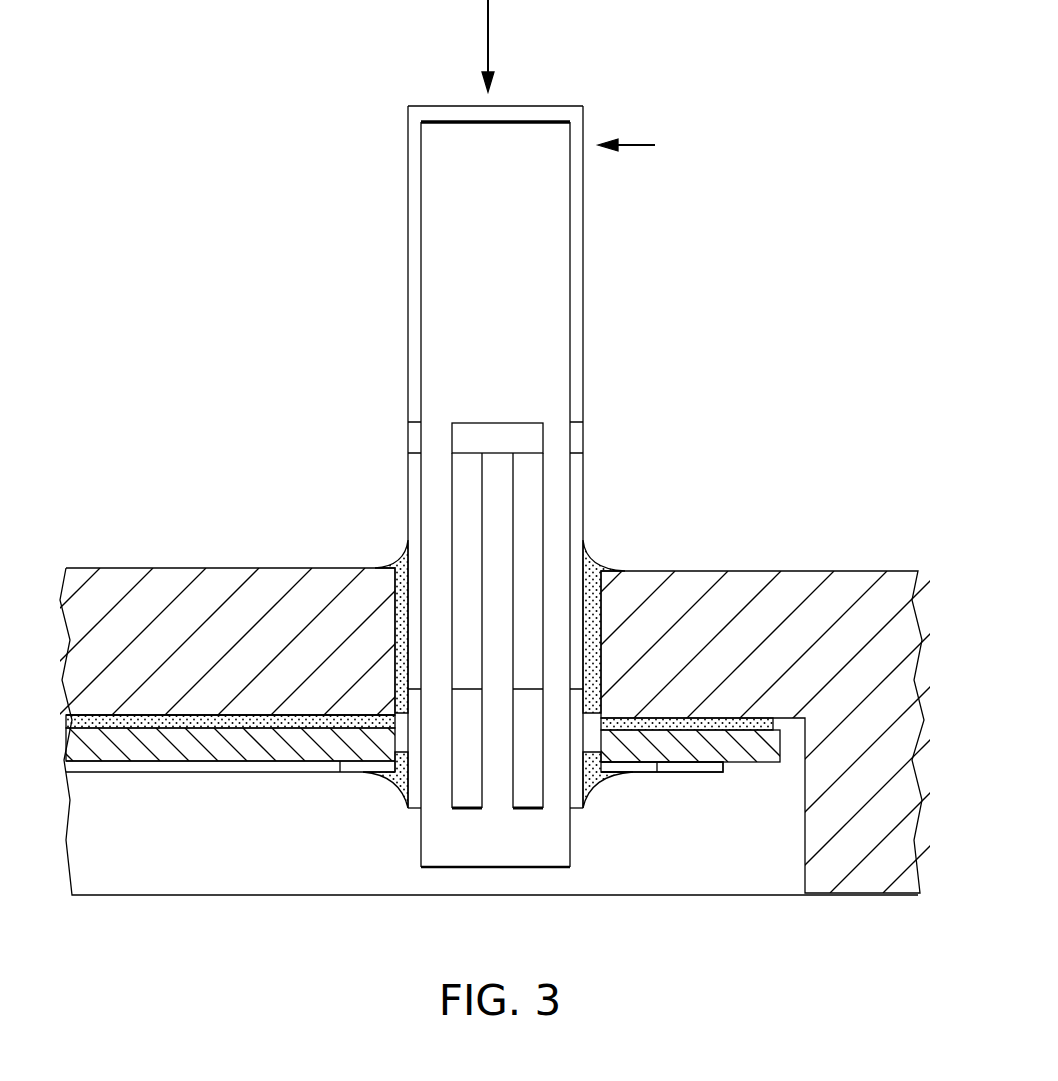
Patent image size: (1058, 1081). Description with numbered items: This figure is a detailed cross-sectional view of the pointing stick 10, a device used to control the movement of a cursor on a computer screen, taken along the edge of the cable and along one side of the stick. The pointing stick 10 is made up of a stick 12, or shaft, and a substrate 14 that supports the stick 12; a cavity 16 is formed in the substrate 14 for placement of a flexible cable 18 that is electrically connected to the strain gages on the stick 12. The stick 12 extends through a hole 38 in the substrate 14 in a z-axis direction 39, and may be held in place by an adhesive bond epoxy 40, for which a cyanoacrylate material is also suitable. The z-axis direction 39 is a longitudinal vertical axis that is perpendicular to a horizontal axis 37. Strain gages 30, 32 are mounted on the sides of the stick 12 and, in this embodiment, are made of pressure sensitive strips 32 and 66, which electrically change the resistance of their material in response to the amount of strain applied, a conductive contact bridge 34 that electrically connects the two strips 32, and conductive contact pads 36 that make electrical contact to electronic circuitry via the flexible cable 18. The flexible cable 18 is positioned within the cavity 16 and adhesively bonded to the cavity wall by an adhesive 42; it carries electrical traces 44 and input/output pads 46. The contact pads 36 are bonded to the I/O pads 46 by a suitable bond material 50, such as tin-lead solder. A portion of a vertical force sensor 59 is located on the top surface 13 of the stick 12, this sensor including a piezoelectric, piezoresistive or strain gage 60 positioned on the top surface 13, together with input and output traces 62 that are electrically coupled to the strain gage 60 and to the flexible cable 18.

The pointing stick 10 is at (439, 433).
The stick 12 is at (478, 194).
The top surface 13 is at (441, 120).
The substrate 14 is at (158, 612).
The cavity 16 is at (175, 876).
The flexible cable 18 is at (88, 730).
The strain gage 30 is at (589, 609).
The pressure sensitive strips 32 is at (518, 495).
The conductive contact bridge 34 is at (570, 430).
The conductive contact pads 36 is at (580, 790).
The horizontal axis 37 is at (646, 145).
The hole 38 is at (635, 548).
The z-axis direction 39 is at (492, 28).
The adhesive bond epoxy 40 is at (400, 545).
The adhesive 42 is at (180, 712).
The electrical traces 44 is at (145, 767).
The I/O pads 46 is at (352, 768).
The bond material 50 is at (600, 770).
The vertical force sensor 59 is at (474, 450).
The strain gage 60 is at (540, 116).
The input and output traces 62 is at (408, 250).
The pressure sensitive strip 66 is at (418, 478).